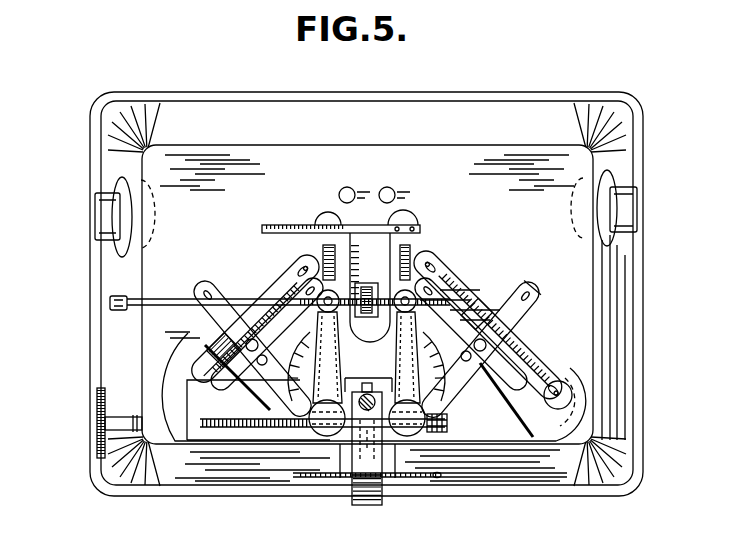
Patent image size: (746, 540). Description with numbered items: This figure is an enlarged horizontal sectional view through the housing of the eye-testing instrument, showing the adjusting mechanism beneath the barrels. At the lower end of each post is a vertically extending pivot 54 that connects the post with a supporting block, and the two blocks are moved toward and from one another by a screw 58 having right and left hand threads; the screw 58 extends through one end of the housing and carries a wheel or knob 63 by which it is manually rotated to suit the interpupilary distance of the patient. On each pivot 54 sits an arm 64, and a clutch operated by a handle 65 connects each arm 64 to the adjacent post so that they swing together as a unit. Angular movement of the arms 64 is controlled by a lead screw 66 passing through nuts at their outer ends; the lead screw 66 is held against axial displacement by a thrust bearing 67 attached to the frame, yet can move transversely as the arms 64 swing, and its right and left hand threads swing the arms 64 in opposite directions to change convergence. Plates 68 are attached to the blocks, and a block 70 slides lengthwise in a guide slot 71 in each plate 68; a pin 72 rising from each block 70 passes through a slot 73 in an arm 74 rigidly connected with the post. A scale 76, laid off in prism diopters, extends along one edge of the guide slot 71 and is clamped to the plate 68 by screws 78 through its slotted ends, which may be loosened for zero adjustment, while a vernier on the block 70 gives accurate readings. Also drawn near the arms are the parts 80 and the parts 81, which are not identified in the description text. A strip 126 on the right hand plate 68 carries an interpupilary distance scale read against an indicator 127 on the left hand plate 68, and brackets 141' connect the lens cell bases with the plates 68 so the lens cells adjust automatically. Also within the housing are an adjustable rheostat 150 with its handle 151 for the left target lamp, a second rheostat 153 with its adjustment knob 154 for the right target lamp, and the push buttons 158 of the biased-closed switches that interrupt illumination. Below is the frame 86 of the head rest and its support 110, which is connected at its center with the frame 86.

The handle 151 is at (112, 212).
The adjustable rheostat 150 is at (160, 214).
The adjustment knob 154 is at (638, 208).
The rheostat 153 is at (576, 201).
The strip 126 is at (275, 225).
The indicator 127 is at (326, 223).
The push button 158 is at (388, 187).
The bracket 141' is at (343, 252).
The lead screw 66 is at (166, 298).
The arm 64 is at (348, 339).
The thrust bearing 67 is at (370, 284).
The plate 68 is at (256, 283).
The screw 78 is at (436, 258).
The slot 73 is at (205, 302).
The arm 74 is at (533, 310).
The scale 76 is at (218, 350).
The block 70 is at (218, 387).
The guide slot 71 is at (248, 386).
The pin 72 is at (470, 382).
The lower arm 81 is at (474, 427).
The lower arm 80 is at (438, 372).
The pivot 54 is at (367, 406).
The screw 58 is at (223, 432).
The wheel or knob 63 is at (97, 442).
The handle 65 is at (323, 448).
The frame 86 is at (362, 506).
The support 110 is at (405, 483).